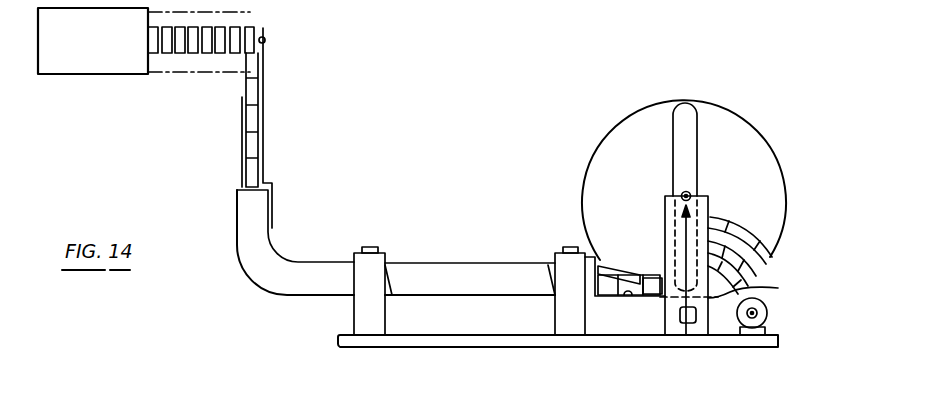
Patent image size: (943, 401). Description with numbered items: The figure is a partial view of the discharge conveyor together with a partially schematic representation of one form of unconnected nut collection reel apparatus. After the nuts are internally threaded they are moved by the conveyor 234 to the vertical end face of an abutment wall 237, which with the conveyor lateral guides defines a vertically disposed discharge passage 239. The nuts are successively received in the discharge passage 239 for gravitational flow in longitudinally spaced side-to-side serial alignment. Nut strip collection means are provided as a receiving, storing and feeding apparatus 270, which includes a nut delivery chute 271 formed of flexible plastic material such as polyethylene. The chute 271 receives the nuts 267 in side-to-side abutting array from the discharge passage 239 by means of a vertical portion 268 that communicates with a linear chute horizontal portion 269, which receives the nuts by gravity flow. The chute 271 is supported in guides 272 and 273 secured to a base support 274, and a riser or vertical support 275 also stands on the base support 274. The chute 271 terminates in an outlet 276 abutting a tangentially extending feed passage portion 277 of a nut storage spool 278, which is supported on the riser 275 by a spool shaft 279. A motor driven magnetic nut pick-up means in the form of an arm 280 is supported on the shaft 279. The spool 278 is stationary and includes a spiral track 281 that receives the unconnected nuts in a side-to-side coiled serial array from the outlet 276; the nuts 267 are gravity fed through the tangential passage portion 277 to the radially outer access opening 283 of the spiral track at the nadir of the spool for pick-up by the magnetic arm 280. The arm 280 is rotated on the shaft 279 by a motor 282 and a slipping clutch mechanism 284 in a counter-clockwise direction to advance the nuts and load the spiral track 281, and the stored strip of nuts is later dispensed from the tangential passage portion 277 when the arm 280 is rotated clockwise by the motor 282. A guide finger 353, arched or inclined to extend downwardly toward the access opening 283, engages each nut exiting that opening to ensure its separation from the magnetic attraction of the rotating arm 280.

The conveyor 234 is at (73, 76).
The abutment wall 237 is at (266, 41).
The discharge passage 239 is at (262, 30).
The nuts 267 is at (250, 89).
The vertical portion 268 is at (240, 234).
The linear chute horizontal portion 269 is at (476, 262).
The receiving, storing and feeding apparatus 270 is at (577, 106).
The nut delivery chute 271 is at (396, 263).
The guide 272 is at (354, 313).
The guide 273 is at (560, 313).
The base support 274 is at (752, 348).
The riser 275 is at (762, 290).
The outlet 276 is at (585, 257).
The tangential feed passage portion 277 is at (634, 295).
The nut storage spool 278 is at (782, 153).
The spool shaft 279 is at (690, 192).
The magnetic pick-up arm 280 is at (698, 147).
The spiral track 281 is at (772, 257).
The motor 282 is at (768, 313).
The access opening 283 is at (652, 278).
The slipping clutch mechanism 284 is at (690, 324).
The guide finger 353 is at (626, 266).